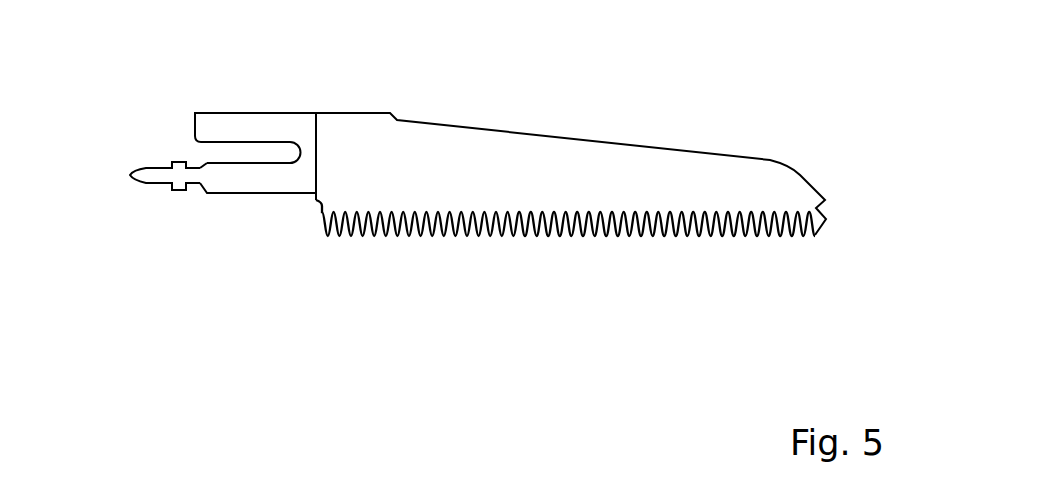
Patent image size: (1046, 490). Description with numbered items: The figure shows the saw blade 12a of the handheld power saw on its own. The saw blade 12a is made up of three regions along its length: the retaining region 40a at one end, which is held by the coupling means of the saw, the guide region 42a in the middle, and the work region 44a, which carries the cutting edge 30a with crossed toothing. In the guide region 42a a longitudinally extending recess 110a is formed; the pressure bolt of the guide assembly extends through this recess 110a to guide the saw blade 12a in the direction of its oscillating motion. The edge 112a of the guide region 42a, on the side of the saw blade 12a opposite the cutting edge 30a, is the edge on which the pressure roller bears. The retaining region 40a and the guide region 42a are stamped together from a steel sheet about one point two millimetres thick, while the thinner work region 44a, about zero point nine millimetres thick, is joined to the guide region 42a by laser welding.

The saw blade 12a is at (467, 163).
The edge 112a is at (247, 113).
The recess 110a is at (185, 153).
The retaining region 40a is at (155, 175).
The guide region 42a is at (247, 175).
The cutting edge 30a is at (397, 232).
The work region 44a is at (542, 175).